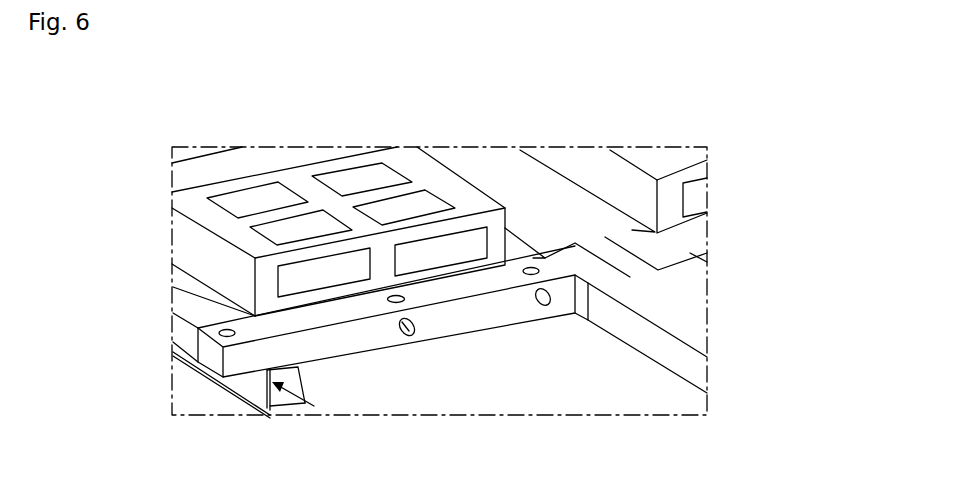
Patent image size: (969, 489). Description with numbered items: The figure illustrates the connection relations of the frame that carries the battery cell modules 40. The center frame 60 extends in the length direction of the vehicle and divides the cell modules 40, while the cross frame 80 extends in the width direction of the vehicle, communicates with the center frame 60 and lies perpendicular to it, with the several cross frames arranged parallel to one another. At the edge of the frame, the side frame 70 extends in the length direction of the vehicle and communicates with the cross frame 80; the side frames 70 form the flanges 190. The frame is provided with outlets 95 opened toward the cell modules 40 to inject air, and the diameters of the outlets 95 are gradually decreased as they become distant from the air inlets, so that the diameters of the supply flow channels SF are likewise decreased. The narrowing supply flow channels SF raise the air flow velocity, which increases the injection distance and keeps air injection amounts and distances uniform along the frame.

The cell module 40 is at (196, 257).
The center frame 60 is at (565, 218).
The flange 190 is at (637, 245).
The cross frame 80 is at (442, 335).
The outlet 95 is at (407, 335).
The side frame 70 is at (185, 343).
The supply flow channel SF is at (182, 360).